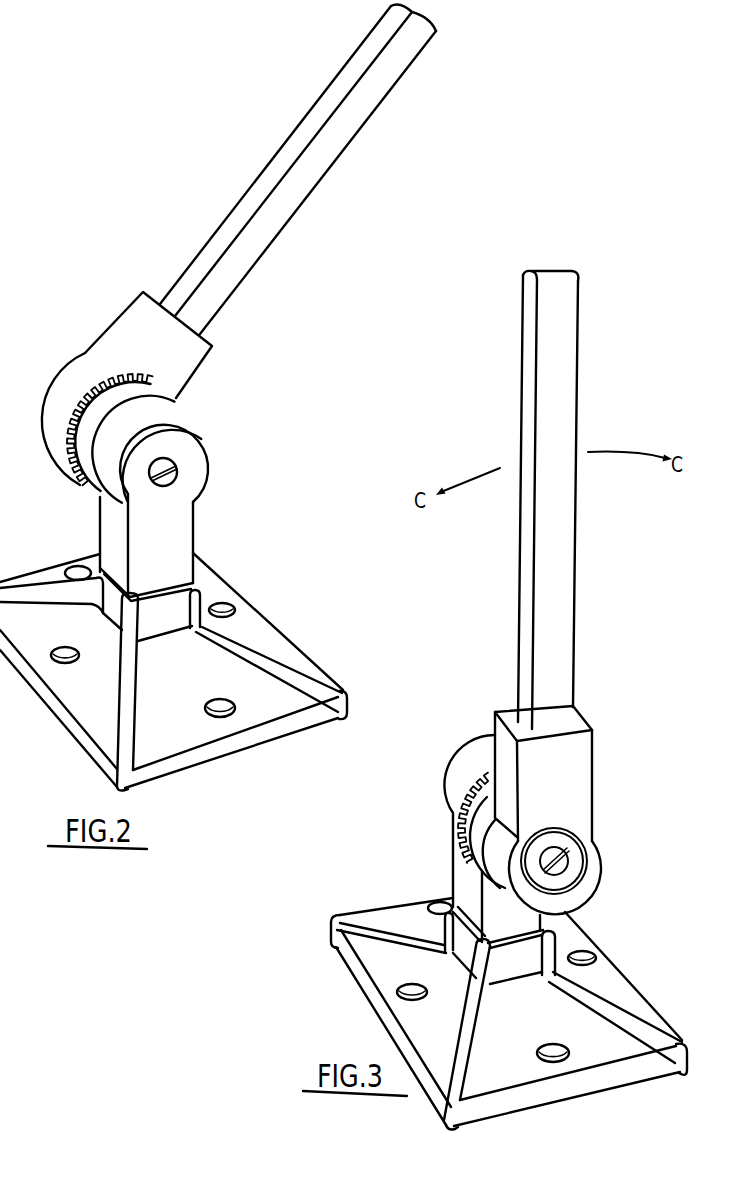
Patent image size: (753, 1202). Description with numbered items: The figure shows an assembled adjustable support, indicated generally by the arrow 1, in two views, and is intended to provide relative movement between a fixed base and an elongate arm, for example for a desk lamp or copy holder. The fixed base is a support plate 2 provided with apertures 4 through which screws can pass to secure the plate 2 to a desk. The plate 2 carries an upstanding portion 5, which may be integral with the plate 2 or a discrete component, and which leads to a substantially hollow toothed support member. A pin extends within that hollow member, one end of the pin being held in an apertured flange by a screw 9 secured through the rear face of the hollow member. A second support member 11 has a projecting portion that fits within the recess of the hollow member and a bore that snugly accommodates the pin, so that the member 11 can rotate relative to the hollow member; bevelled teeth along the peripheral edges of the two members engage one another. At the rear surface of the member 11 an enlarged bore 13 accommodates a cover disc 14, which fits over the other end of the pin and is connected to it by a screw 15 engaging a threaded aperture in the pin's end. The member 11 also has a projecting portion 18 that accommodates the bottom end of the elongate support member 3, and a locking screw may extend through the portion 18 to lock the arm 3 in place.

In FIG. 2, the adjustable support 1 is at (218, 403).
In FIG. 3, the adjustable support 1 is at (509, 700).
In FIG. 2, the support plate 2 is at (192, 737).
In FIG. 3, the support plate 2 is at (509, 1014).
In FIG. 2, the elongate support member 3 is at (303, 193).
In FIG. 3, the elongate support member 3 is at (568, 637).
In FIG. 3, the apertures 4 is at (555, 1052).
In FIG. 2, the upstanding portion 5 is at (179, 509).
In FIG. 2, the screw 9 is at (175, 472).
In FIG. 3, the second support member 11 is at (580, 800).
In FIG. 3, the enlarged bore 13 is at (583, 863).
In FIG. 3, the cover disc 14 is at (557, 878).
In FIG. 3, the screw 15 is at (567, 847).
In FIG. 2, the projecting portion 18 is at (177, 363).
In FIG. 3, the projecting portion 18 is at (540, 768).